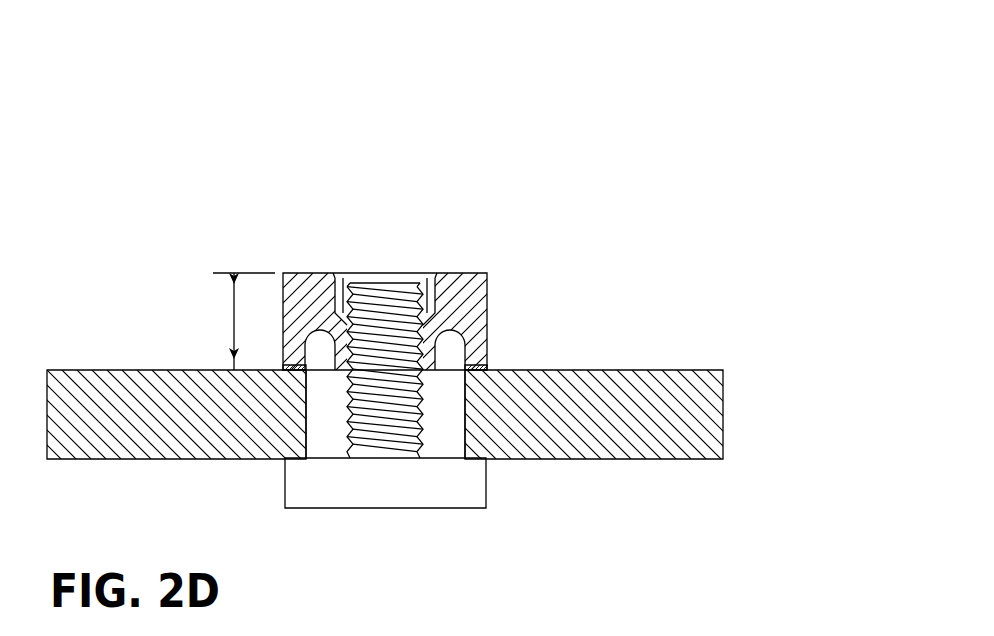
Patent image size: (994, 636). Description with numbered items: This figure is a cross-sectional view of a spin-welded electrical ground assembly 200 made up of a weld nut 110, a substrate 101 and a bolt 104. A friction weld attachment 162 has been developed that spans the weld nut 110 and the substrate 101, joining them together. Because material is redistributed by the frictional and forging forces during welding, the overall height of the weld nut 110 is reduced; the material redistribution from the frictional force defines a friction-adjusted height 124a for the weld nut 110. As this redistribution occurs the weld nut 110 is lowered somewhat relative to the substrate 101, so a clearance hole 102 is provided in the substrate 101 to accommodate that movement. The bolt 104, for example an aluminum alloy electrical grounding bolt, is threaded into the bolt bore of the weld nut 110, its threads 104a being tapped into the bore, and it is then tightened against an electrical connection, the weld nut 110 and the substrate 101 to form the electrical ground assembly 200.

The ground assembly 200 is at (655, 177).
The weld nut 110 is at (490, 302).
The substrate 101 is at (678, 393).
The clearance hole 102 is at (443, 436).
The bolt 104 is at (358, 485).
The threads 104a is at (387, 315).
The friction weld attachment 162 is at (477, 375).
The friction-adjusted height 124a is at (202, 321).